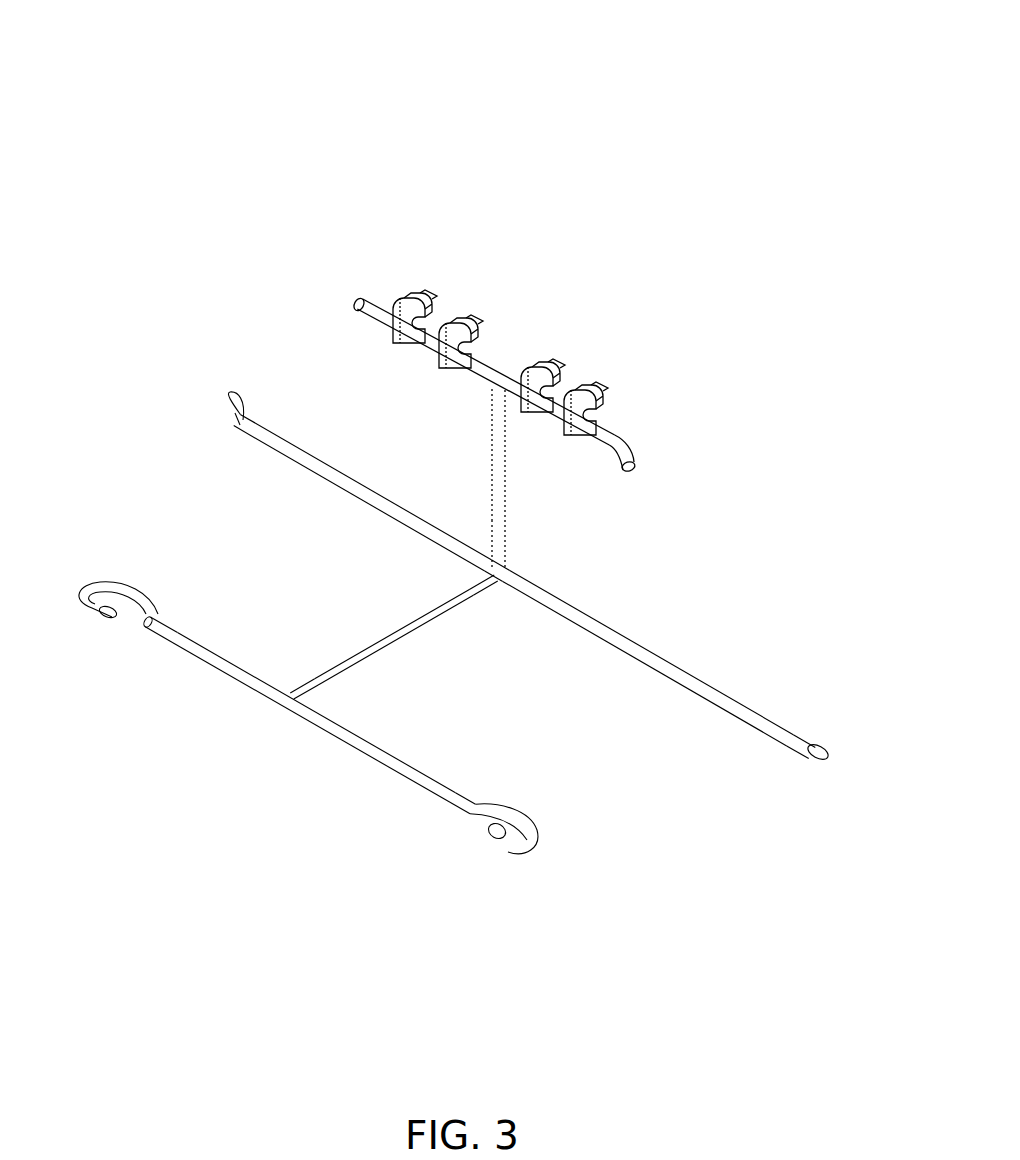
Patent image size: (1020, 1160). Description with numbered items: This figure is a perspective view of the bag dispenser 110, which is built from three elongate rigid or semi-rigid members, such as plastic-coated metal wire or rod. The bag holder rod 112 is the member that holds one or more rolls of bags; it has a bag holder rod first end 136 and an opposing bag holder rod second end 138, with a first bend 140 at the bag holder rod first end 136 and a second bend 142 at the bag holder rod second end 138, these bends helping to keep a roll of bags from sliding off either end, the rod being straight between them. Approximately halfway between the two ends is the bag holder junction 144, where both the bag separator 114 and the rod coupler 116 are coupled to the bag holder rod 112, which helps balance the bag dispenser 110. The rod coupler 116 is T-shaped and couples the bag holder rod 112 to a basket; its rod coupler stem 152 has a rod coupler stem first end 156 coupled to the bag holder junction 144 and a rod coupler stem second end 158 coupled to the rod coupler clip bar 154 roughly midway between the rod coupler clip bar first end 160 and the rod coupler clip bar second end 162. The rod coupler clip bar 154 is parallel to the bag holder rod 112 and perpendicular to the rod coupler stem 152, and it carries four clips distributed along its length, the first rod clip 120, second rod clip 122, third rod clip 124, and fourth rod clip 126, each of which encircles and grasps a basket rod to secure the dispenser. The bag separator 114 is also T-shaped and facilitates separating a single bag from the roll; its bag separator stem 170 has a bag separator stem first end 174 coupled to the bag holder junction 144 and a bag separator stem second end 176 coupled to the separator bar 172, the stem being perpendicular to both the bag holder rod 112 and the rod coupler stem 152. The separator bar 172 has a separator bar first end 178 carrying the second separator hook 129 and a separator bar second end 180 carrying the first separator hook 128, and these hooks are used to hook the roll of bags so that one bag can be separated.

The bag dispenser 110 is at (645, 92).
The bag holder rod 112 is at (690, 680).
The bag separator 114 is at (190, 730).
The rod coupler 116 is at (680, 403).
The first rod clip 120 is at (580, 393).
The second rod clip 122 is at (543, 370).
The third rod clip 124 is at (458, 324).
The fourth rod clip 126 is at (410, 298).
The first separator hook 128 is at (508, 838).
The second separator hook 129 is at (132, 596).
The bag holder rod first end 136 is at (220, 408).
The bag holder rod second end 138 is at (820, 745).
The first bend 140 is at (238, 420).
The second bend 142 is at (802, 760).
The bag holder junction 144 is at (502, 572).
The rod coupler stem 152 is at (490, 449).
The rod coupler clip bar 154 is at (505, 372).
The rod coupler stem first end 156 is at (496, 557).
The rod coupler stem second end 158 is at (490, 397).
The rod coupler clip bar first end 160 is at (355, 301).
The rod coupler clip bar second end 162 is at (640, 468).
The bag separator stem 170 is at (445, 608).
The separator bar 172 is at (418, 780).
The bag separator stem first end 174 is at (480, 586).
The bag separator stem second end 176 is at (292, 690).
The separator bar first end 178 is at (150, 628).
The separator bar second end 180 is at (473, 805).